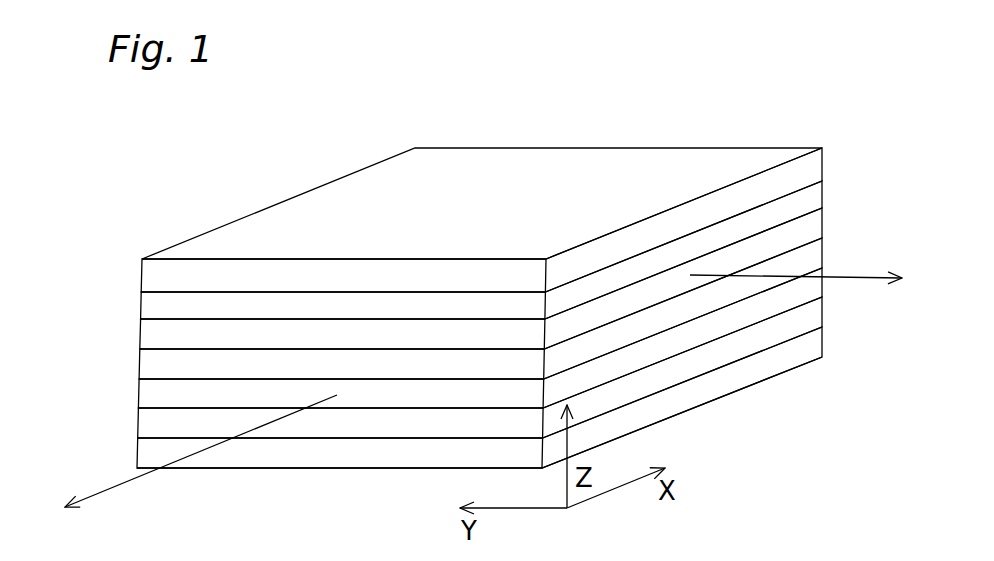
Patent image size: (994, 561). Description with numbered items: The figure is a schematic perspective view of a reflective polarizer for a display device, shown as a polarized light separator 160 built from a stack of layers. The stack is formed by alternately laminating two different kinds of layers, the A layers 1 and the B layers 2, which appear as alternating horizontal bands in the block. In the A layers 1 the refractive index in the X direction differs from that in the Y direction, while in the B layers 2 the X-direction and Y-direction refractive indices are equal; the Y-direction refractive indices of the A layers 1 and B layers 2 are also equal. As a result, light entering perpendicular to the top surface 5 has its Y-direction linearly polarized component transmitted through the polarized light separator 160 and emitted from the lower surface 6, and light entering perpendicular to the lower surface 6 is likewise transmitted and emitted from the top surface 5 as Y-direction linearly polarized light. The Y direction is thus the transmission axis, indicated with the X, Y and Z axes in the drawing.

The A layers 1 is at (152, 274).
The B layers 2 is at (152, 304).
The top surface 5 is at (388, 184).
The lower surface 6 is at (327, 470).
The polarized light separator 160 is at (458, 306).